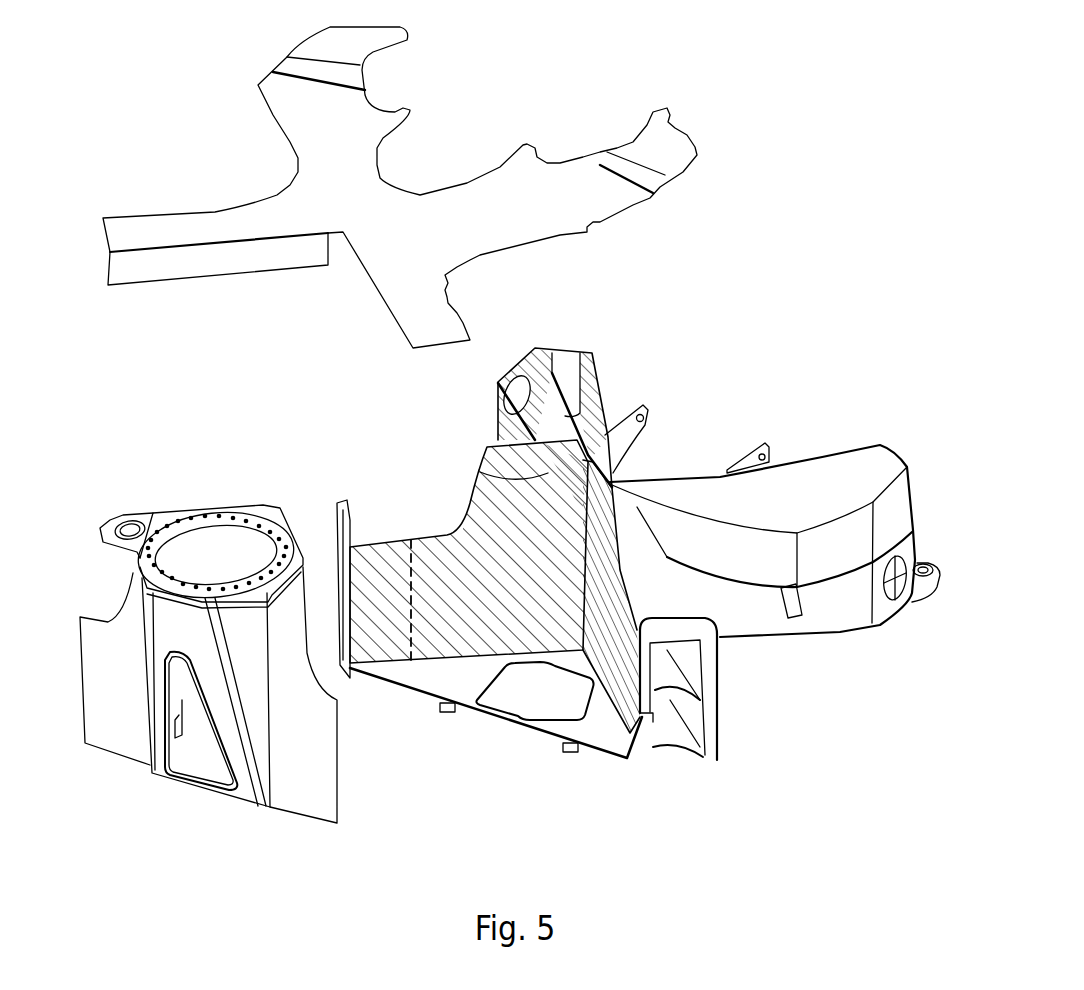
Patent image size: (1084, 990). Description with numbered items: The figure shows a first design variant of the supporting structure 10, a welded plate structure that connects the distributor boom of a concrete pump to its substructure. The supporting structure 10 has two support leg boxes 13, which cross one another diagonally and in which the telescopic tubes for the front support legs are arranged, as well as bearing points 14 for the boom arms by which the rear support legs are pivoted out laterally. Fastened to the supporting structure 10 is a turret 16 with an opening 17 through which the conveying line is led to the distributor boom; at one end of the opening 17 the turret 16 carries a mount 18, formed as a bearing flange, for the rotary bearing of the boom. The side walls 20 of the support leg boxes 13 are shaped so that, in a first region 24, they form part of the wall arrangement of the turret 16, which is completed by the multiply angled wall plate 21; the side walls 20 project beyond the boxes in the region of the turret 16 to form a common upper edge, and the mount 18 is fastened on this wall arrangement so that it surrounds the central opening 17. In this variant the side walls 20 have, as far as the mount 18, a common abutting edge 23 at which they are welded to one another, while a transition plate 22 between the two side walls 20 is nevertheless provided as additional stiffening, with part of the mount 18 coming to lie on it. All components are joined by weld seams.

The supporting structure 10 is at (650, 553).
The support leg boxes 13 is at (784, 600).
The bearing points 14 is at (922, 565).
The turret 16 is at (212, 643).
The opening 17 is at (233, 542).
The mount 18 is at (182, 577).
The side walls 20 is at (489, 581).
The wall plate 21 is at (247, 720).
The transition plate 22 is at (482, 472).
The abutting edge 23 is at (577, 610).
The first region 24 is at (483, 550).